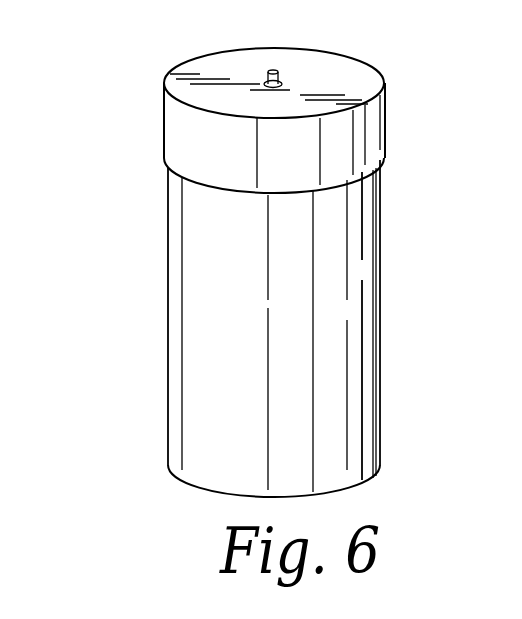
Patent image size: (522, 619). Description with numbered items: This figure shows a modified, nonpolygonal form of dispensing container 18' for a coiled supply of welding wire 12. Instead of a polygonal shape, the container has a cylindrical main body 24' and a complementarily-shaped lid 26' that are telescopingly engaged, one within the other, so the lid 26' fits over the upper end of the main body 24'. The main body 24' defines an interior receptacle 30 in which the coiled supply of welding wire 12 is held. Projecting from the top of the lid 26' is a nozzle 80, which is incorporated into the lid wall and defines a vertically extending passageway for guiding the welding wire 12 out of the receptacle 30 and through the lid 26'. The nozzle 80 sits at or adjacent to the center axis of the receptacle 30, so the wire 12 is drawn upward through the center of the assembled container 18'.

The welding wire 12 is at (297, 390).
The dispensing container 18' is at (108, 302).
The cylindrical main body 24' is at (332, 330).
The lid 26' is at (323, 120).
The receptacle 30 is at (322, 353).
The nozzle 80 is at (283, 77).